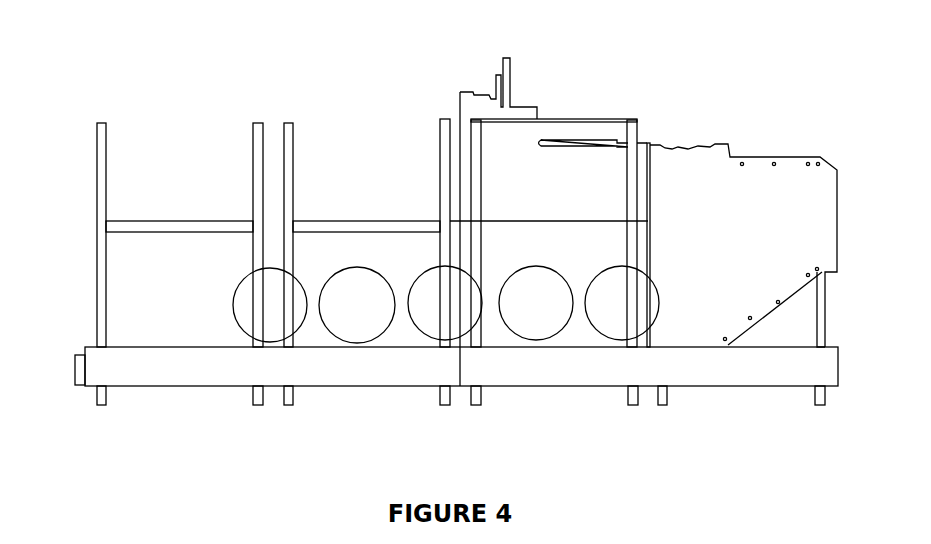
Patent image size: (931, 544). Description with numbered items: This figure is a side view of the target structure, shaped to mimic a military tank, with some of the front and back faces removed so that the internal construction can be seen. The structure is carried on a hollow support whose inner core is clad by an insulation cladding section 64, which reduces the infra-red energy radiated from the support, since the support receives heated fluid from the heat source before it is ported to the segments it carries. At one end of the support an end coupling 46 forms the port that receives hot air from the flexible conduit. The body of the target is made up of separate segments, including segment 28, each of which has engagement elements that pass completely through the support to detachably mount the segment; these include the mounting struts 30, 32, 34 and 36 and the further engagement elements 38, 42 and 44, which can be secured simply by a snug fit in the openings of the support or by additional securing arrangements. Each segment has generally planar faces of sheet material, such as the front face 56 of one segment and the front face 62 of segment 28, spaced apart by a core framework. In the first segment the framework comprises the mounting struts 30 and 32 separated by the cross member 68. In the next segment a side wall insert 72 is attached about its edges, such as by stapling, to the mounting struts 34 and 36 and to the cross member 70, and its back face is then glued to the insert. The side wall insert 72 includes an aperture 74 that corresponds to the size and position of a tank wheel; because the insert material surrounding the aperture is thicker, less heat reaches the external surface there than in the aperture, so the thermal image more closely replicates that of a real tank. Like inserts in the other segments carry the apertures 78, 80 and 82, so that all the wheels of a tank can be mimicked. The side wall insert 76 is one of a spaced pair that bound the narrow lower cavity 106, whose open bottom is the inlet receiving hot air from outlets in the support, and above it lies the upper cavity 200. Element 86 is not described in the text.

The structure segment 28 is at (720, 261).
The mounting strut 30 is at (107, 157).
The mounting strut 32 is at (253, 157).
The mounting strut 34 is at (293, 133).
The mounting strut 36 is at (440, 157).
The engagement element 38 is at (480, 150).
The engagement element 42 is at (667, 400).
The engagement element 44 is at (810, 397).
The end coupling 46 is at (75, 372).
The front face 56 is at (522, 108).
The front face 62 is at (752, 173).
The insulation cladding section 64 is at (207, 372).
The cross member 68 is at (143, 222).
The cross member 70 is at (302, 220).
The side wall insert 72 is at (397, 328).
The aperture 74 is at (357, 322).
The side wall insert 76 is at (527, 245).
The aperture 78 is at (467, 293).
The aperture 80 is at (537, 277).
The aperture 82 is at (590, 322).
The beam divider 86 is at (460, 363).
The lower cavity 106 is at (518, 320).
The upper cavity 200 is at (568, 158).